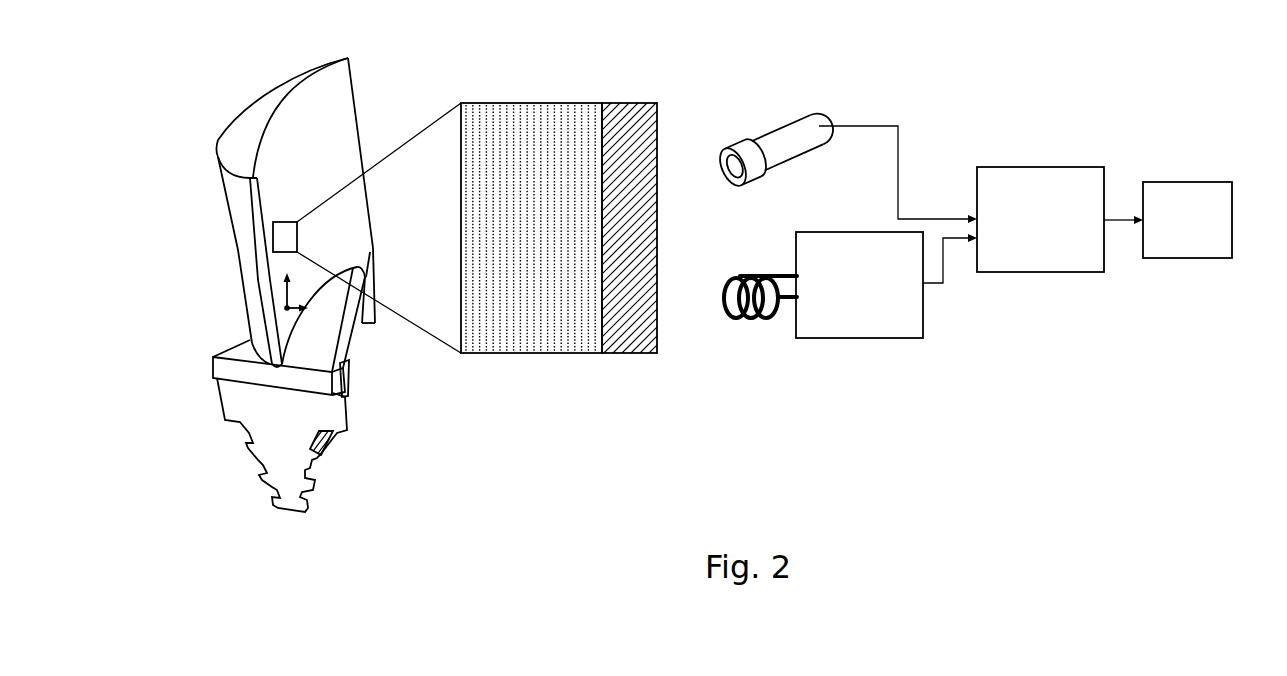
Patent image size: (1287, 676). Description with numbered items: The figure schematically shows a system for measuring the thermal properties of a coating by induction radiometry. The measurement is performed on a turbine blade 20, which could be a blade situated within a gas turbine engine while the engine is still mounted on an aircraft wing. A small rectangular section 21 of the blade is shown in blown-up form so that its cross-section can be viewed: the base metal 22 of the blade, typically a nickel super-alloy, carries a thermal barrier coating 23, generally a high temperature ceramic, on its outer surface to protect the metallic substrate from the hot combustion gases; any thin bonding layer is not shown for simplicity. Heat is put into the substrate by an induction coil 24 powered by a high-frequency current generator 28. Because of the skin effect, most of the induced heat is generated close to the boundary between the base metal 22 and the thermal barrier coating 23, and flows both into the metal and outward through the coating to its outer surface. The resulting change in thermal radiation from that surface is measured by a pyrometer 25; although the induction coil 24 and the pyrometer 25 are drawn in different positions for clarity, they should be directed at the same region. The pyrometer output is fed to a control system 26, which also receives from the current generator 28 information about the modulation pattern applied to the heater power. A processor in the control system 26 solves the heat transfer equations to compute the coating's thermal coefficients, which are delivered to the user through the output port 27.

The turbine blade 20 is at (328, 102).
The rectangular section 21 is at (282, 235).
The base metal 22 is at (543, 335).
The thermal barrier coating 23 is at (640, 343).
The induction coil 24 is at (768, 325).
The pyrometer 25 is at (777, 120).
The control system 26 is at (1058, 237).
The output port 27 is at (1170, 237).
The high-frequency current generator 28 is at (876, 302).